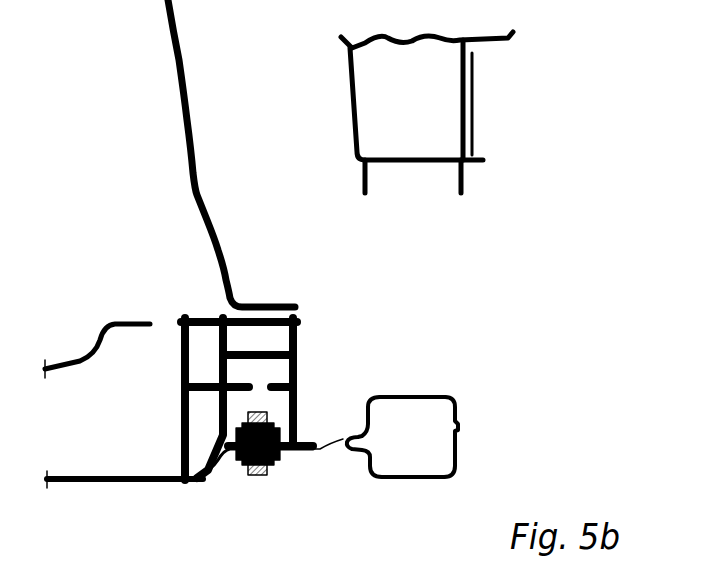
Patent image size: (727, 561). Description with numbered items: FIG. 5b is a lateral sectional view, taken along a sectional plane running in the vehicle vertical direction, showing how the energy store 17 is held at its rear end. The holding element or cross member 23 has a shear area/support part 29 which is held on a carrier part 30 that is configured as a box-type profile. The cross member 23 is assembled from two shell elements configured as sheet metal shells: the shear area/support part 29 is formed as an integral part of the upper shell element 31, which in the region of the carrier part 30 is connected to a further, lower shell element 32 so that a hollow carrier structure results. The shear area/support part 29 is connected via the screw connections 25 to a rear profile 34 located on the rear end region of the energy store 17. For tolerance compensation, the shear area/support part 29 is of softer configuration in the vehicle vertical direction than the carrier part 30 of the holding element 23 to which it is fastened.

The energy store 17 is at (106, 204).
The rear profile 34 is at (178, 422).
The screw connections 25 is at (258, 476).
The shear area/support part 29 is at (288, 472).
The holding element or cross member 23 is at (403, 372).
The upper shell element 31 is at (417, 396).
The lower shell element 32 is at (407, 480).
The carrier part 30 is at (451, 422).